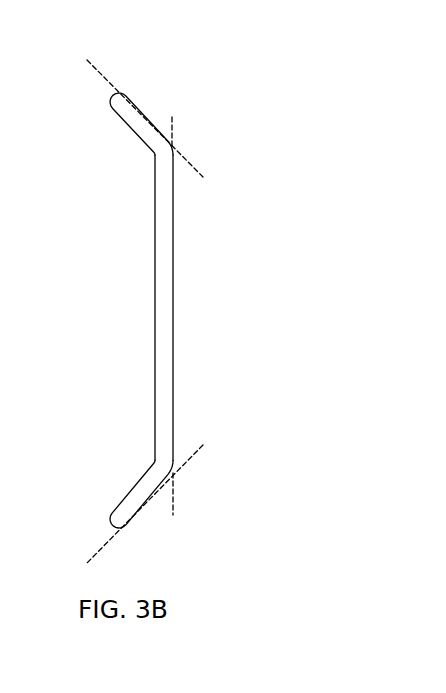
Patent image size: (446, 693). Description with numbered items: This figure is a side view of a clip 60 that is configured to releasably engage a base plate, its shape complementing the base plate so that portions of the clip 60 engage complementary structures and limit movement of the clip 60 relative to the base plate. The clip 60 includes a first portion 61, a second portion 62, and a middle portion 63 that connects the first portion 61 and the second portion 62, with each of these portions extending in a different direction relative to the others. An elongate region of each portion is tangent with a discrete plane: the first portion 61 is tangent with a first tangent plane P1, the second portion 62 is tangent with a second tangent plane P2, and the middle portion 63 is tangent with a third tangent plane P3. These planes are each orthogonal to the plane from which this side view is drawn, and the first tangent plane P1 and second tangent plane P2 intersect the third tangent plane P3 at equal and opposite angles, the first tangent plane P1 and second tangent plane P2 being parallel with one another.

The clip 60 is at (169, 288).
The first portion 61 is at (88, 97).
The second portion 62 is at (88, 475).
The middle portion 63 is at (88, 157).
The first tangent plane P1 is at (196, 170).
The second tangent plane P2 is at (196, 458).
The third tangent plane P3 is at (172, 119).